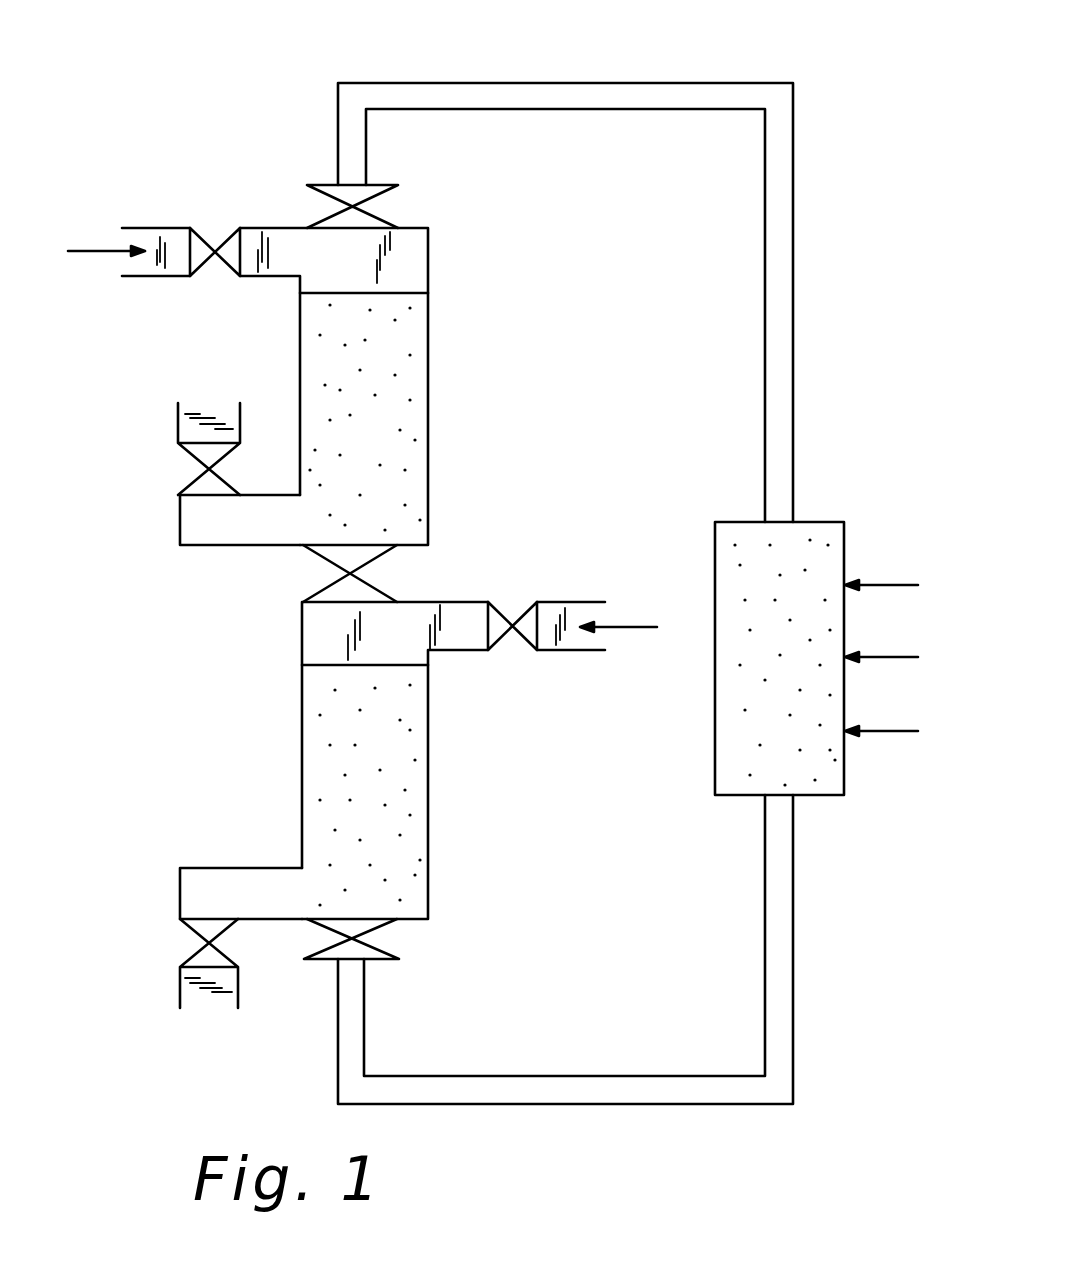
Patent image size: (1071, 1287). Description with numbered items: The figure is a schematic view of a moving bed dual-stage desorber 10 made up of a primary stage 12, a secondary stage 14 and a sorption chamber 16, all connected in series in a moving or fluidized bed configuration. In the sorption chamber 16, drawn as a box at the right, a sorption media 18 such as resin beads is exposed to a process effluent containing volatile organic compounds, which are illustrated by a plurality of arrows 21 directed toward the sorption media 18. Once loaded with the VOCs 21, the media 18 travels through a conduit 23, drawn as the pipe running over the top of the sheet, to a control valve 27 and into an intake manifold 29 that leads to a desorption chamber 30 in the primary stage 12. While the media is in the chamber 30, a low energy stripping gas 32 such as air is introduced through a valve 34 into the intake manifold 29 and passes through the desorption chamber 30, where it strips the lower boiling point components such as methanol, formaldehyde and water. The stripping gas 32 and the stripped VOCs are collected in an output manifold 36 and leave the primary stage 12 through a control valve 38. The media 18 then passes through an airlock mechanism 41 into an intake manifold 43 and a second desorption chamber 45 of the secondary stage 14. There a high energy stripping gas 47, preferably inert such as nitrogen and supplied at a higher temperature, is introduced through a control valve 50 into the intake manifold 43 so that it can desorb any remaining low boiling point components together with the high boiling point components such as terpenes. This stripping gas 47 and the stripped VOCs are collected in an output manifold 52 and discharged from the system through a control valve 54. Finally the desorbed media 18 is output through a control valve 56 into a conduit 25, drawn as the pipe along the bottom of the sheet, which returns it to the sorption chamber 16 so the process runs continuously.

The dual-stage desorber 10 is at (285, 141).
The primary stage 12 is at (466, 403).
The secondary stage 14 is at (464, 773).
The sorption chamber 16 is at (736, 537).
The sorption media 18 is at (732, 728).
The volatile organic compounds 21 is at (876, 518).
The conduit 23 is at (618, 83).
The conduit 25 is at (577, 1100).
The control valve 27 is at (387, 197).
The intake manifold 29 is at (420, 258).
The desorption chamber 30 is at (407, 462).
The low energy stripping gas 32 is at (93, 251).
The valve 34 is at (203, 238).
The output manifold 36 is at (225, 525).
The control valve 38 is at (187, 453).
The airlock mechanism 41 is at (320, 557).
The intake manifold 43 is at (458, 612).
The second desorption chamber 45 is at (415, 852).
The high energy stripping gas 47 is at (634, 627).
The control valve 50 is at (507, 610).
The output manifold 52 is at (225, 871).
The control valve 54 is at (200, 950).
The control valve 56 is at (389, 926).